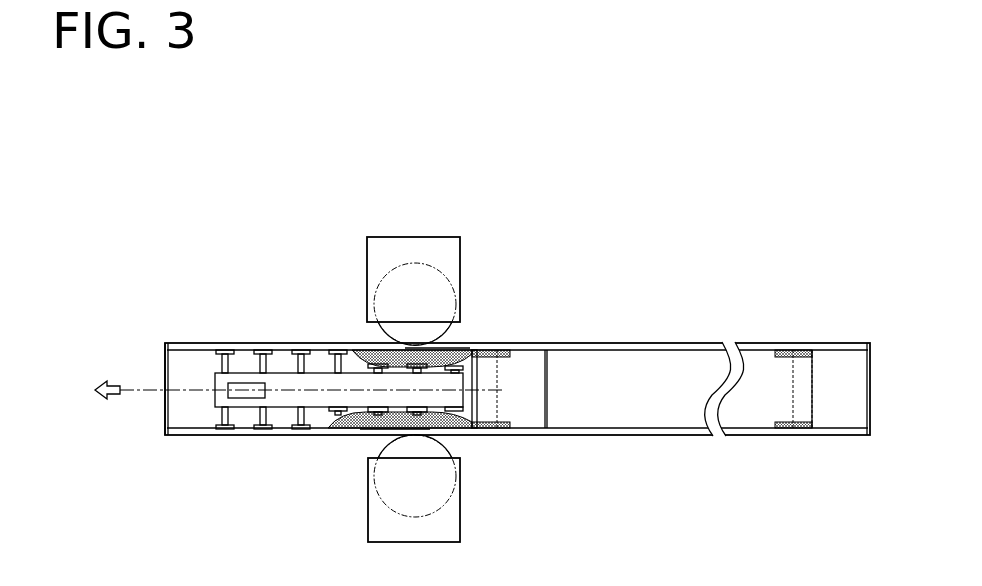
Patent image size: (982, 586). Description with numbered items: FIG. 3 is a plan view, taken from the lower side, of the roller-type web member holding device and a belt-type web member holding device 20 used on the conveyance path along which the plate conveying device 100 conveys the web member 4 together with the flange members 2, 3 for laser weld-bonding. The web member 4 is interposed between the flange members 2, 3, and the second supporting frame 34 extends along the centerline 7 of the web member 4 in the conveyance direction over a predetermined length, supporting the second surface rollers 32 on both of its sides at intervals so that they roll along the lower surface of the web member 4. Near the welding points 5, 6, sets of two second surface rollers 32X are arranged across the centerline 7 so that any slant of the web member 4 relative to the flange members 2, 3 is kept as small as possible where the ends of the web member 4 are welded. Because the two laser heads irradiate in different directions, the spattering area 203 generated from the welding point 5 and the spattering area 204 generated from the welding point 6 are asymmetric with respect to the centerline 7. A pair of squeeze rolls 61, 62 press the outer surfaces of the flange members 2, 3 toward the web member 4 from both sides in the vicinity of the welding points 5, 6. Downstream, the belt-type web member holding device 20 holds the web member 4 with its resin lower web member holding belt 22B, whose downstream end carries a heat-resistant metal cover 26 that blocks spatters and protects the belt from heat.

The plate conveying device 100 is at (553, 200).
The belt-type web member holding device 20 is at (602, 433).
The web member 4 is at (190, 360).
The centerline 7 is at (130, 391).
The second supporting frame 34 is at (320, 372).
The flange member 3 is at (225, 350).
The flange member 2 is at (225, 430).
The second surface rollers 32 is at (263, 350).
The spattering area 204 is at (370, 353).
The spattering area 203 is at (352, 420).
The second surface rollers 32X is at (462, 364).
The welding point 6 is at (435, 348).
The welding point 5 is at (392, 432).
The cover 26 is at (517, 409).
The lower web member holding belt 22B is at (757, 353).
The squeeze roll 62 is at (440, 274).
The squeeze roll 61 is at (438, 508).